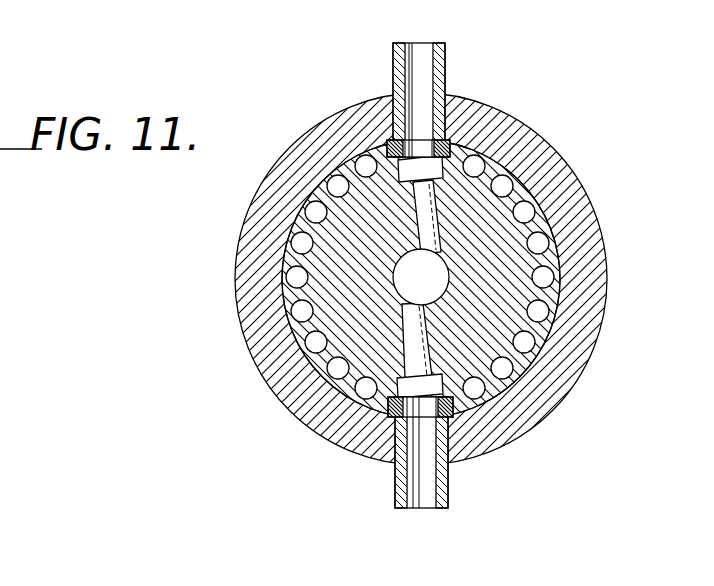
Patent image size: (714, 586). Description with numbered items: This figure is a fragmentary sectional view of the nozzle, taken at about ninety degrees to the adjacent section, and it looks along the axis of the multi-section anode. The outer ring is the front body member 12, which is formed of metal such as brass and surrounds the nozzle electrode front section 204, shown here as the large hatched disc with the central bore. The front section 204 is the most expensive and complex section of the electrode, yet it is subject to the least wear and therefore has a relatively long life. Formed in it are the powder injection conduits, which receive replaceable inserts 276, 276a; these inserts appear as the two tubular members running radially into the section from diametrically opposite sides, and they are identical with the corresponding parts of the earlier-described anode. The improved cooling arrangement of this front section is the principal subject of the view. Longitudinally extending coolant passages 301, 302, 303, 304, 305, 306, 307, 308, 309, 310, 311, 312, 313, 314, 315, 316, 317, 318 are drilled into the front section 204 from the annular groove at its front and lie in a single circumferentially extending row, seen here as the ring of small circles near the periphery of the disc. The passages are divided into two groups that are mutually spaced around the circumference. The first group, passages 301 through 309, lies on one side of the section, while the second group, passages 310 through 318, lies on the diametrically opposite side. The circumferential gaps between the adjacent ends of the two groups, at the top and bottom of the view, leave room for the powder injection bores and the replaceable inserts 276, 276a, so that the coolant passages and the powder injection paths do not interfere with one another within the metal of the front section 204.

The front body member 12 is at (367, 112).
The nozzle electrode front section 204 is at (386, 253).
The replaceable insert 276 is at (448, 492).
The replaceable insert 276a is at (445, 66).
The coolant passage 301 is at (482, 172).
The coolant passage 302 is at (512, 184).
The coolant passage 303 is at (534, 213).
The coolant passage 304 is at (548, 244).
The coolant passage 305 is at (554, 277).
The coolant passage 306 is at (549, 312).
The coolant passage 307 is at (535, 346).
The coolant passage 308 is at (510, 377).
The coolant passage 309 is at (481, 398).
The coolant passage 310 is at (358, 396).
The coolant passage 311 is at (330, 377).
The coolant passage 312 is at (306, 348).
The coolant passage 313 is at (291, 313).
The coolant passage 314 is at (286, 278).
The coolant passage 315 is at (291, 243).
The coolant passage 316 is at (305, 208).
The coolant passage 317 is at (329, 180).
The coolant passage 318 is at (358, 160).